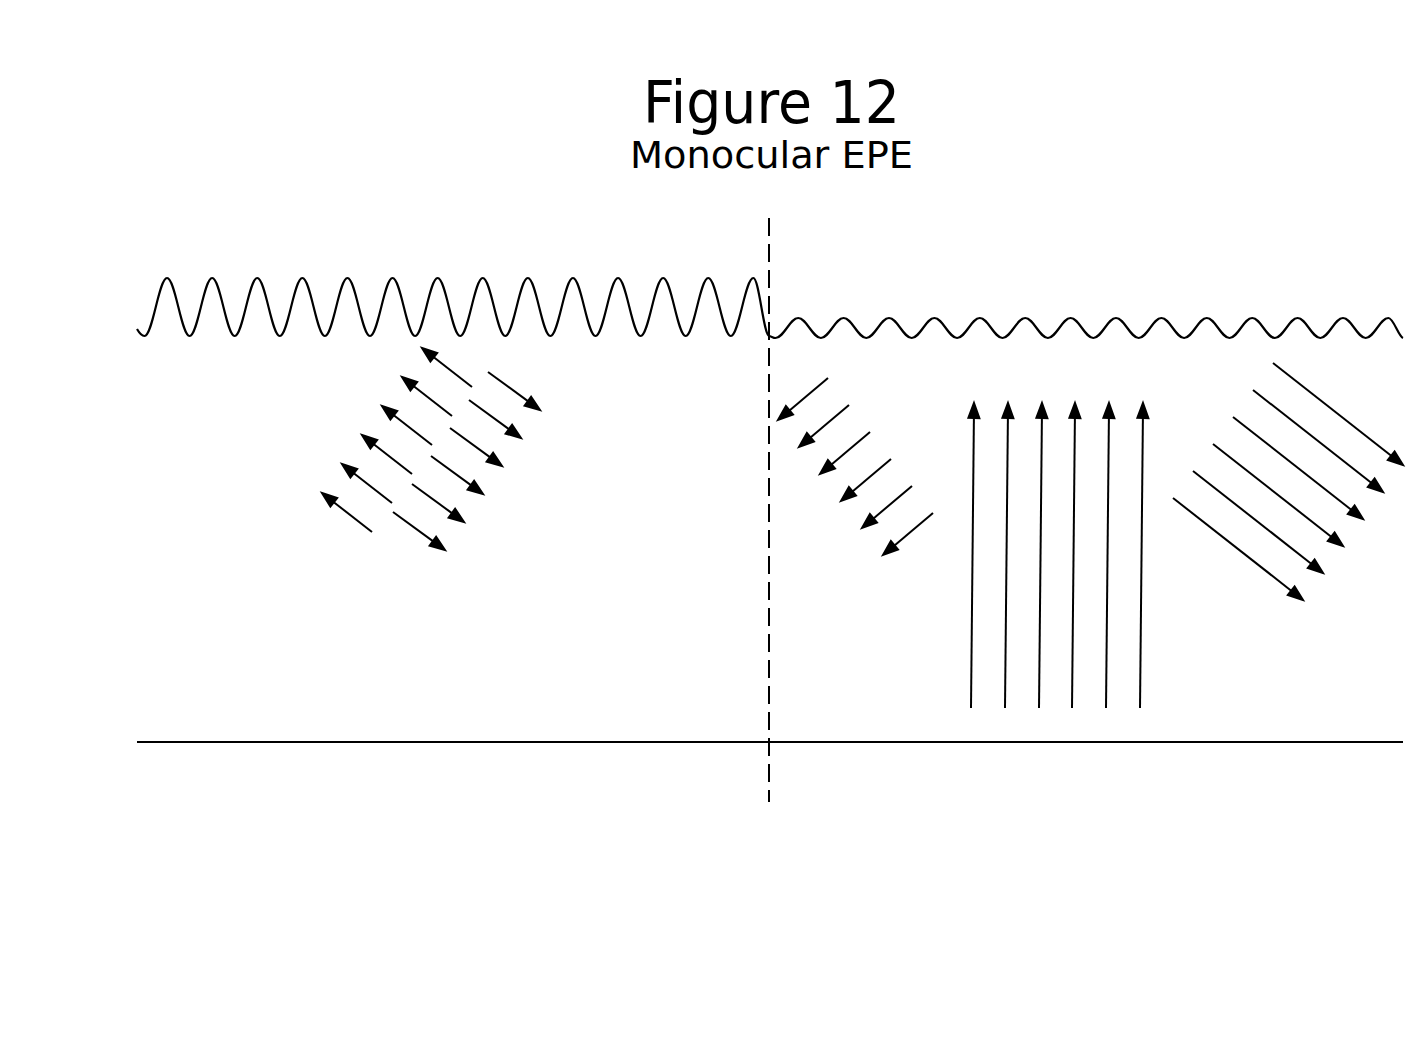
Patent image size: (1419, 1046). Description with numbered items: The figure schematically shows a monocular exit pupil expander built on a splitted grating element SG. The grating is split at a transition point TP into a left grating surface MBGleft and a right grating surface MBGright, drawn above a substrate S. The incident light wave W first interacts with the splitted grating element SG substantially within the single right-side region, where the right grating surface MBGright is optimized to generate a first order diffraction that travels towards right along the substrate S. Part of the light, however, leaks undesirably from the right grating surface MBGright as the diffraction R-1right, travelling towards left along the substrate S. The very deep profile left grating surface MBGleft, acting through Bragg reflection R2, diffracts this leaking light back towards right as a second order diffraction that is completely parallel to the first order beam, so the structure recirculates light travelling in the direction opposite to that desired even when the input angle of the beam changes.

The splitted grating element SG is at (304, 169).
The left grating surface MBGleft is at (599, 310).
The right grating surface MBGright is at (1062, 320).
The transition point TP is at (770, 337).
The substrate S is at (770, 560).
The R-1,right diffraction R-1right is at (820, 480).
The incident light wave W is at (1058, 555).
The Bragg reflection R2 is at (413, 540).